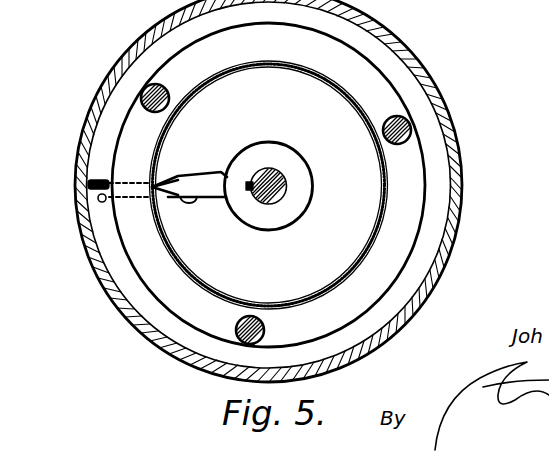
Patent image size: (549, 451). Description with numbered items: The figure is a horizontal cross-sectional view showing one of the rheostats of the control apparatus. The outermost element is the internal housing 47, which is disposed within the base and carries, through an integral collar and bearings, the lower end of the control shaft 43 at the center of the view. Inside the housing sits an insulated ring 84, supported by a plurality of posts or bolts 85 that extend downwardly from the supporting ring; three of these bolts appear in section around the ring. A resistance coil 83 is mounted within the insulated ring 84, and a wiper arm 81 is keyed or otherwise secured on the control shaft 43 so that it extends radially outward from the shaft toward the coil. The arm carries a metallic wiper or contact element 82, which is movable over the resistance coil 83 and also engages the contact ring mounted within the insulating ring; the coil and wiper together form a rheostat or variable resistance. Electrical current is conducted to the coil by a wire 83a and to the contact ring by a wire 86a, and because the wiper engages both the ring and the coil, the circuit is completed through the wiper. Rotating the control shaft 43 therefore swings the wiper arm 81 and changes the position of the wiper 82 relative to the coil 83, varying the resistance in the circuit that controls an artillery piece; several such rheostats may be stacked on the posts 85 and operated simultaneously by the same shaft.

The internal housing 47 is at (430, 84).
The insulated ring 84 is at (410, 182).
The resistance coil 83 is at (322, 290).
The posts or bolts 85 is at (412, 128).
The control shaft 43 is at (306, 208).
The wiper arm 81 is at (217, 173).
The wiper or contact element 82 is at (170, 197).
The wire 83a is at (96, 181).
The wire 86a is at (100, 204).